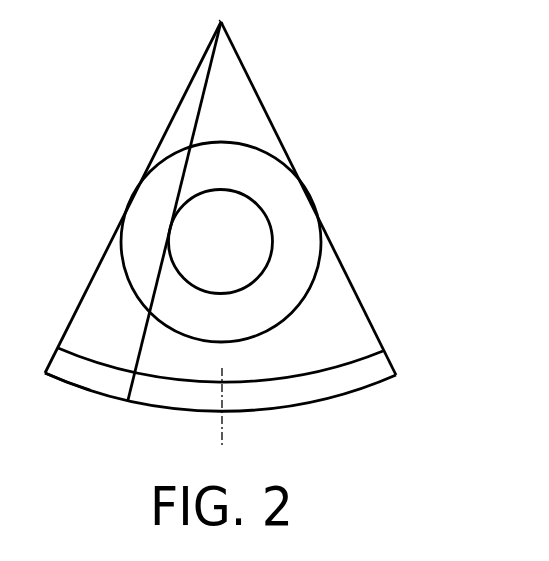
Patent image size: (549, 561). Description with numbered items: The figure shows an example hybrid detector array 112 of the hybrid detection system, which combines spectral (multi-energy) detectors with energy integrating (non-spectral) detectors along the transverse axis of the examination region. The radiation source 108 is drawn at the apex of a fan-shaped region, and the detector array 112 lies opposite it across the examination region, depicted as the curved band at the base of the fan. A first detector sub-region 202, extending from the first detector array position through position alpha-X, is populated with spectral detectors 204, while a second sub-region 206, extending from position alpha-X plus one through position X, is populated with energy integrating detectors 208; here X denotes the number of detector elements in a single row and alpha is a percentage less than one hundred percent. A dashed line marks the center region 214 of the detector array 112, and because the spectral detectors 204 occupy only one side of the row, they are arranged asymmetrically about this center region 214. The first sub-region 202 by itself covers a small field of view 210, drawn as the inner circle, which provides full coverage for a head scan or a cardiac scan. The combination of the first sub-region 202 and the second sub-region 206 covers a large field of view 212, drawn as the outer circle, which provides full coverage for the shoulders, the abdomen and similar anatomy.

The radiation source 108 is at (222, 23).
The one or two dimensional array 112 is at (394, 358).
The first detector sub-region 202 is at (375, 386).
The spectral detectors 204 is at (295, 388).
The second sub-region 206 is at (52, 380).
The energy integrating detectors 208 is at (115, 386).
The small field of view 210 is at (243, 253).
The large field of view 212 is at (243, 182).
The center region 214 is at (232, 372).